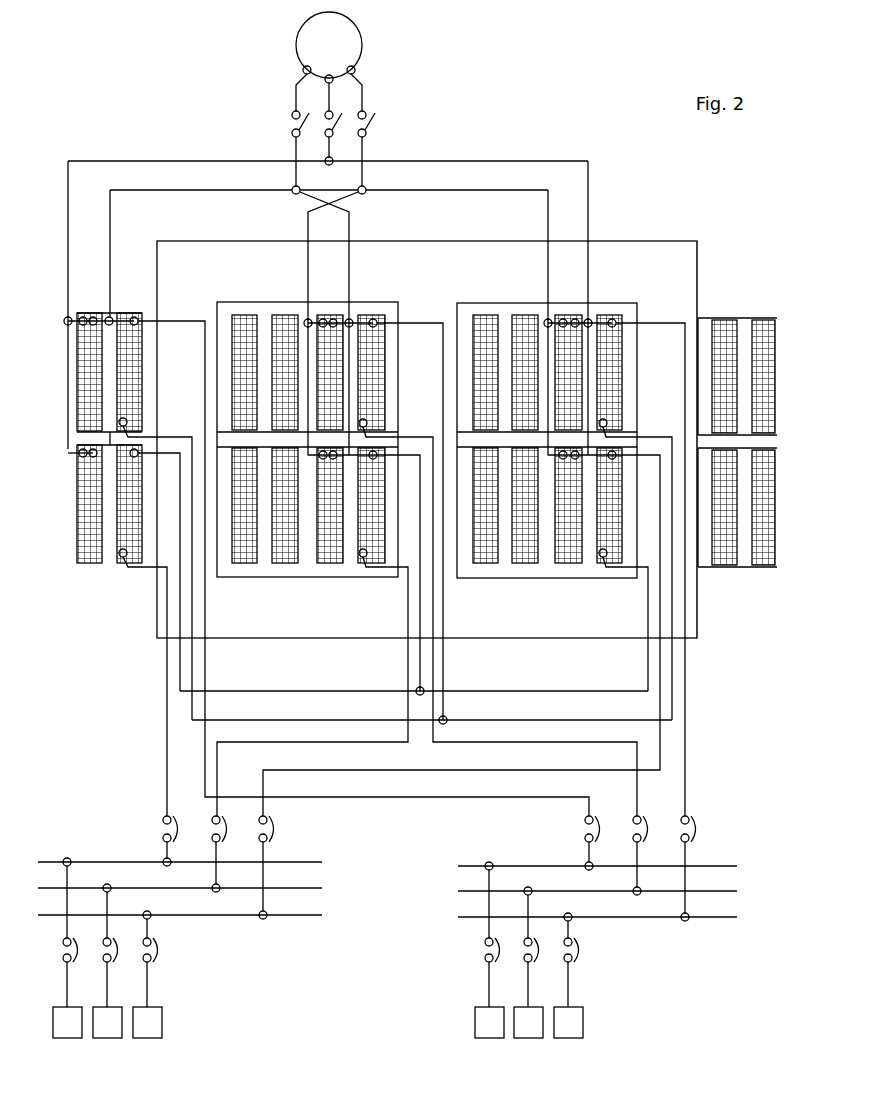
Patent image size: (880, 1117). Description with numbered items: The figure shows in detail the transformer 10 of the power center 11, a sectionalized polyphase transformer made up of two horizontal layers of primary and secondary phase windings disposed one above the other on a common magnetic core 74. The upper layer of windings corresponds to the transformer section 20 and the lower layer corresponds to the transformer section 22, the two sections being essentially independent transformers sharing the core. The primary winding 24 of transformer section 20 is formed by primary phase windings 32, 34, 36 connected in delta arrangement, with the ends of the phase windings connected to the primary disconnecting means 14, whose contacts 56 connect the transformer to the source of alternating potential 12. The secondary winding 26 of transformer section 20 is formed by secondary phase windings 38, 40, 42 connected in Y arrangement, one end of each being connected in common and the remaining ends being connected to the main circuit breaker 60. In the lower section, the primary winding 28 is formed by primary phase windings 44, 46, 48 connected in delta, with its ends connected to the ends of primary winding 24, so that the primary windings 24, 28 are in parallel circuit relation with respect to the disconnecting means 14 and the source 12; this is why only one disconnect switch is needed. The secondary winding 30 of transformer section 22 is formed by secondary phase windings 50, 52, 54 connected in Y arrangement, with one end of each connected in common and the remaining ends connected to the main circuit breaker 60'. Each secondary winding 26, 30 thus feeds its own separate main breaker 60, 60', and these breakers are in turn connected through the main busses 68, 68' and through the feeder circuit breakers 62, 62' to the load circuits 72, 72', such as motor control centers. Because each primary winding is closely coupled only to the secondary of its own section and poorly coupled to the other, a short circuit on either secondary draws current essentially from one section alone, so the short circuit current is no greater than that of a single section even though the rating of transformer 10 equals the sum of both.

The polyphase transformer 10 is at (791, 456).
The power center 11 is at (521, 86).
The source of alternating potential 12 is at (362, 44).
The primary disconnecting means 14 is at (372, 130).
The transformer section 20 is at (784, 390).
The transformer section 22 is at (784, 517).
The primary winding 24 is at (78, 272).
The secondary winding 26 is at (124, 272).
The primary winding 28 is at (78, 630).
The secondary winding 30 is at (121, 630).
The primary phase winding 32 is at (86, 313).
The primary phase winding 34 is at (326, 315).
The primary phase winding 36 is at (566, 315).
The secondary phase winding 38 is at (130, 313).
The secondary phase winding 40 is at (368, 315).
The secondary phase winding 42 is at (609, 315).
The primary phase winding 44 is at (88, 565).
The primary phase winding 46 is at (330, 565).
The primary phase winding 48 is at (569, 565).
The secondary phase winding 50 is at (126, 565).
The secondary phase winding 52 is at (375, 567).
The secondary phase winding 54 is at (614, 567).
The contacts 56 is at (292, 129).
The main circuit breaker 60 is at (238, 863).
The main circuit breaker 60' is at (662, 864).
The feeder circuit breakers 62 is at (130, 936).
The feeder circuit breakers 62' is at (554, 938).
The main bus 68 is at (201, 888).
The main bus 68' is at (575, 891).
The loads 72 is at (107, 1043).
The loads 72' is at (529, 1043).
The common magnetic core 74 is at (660, 243).